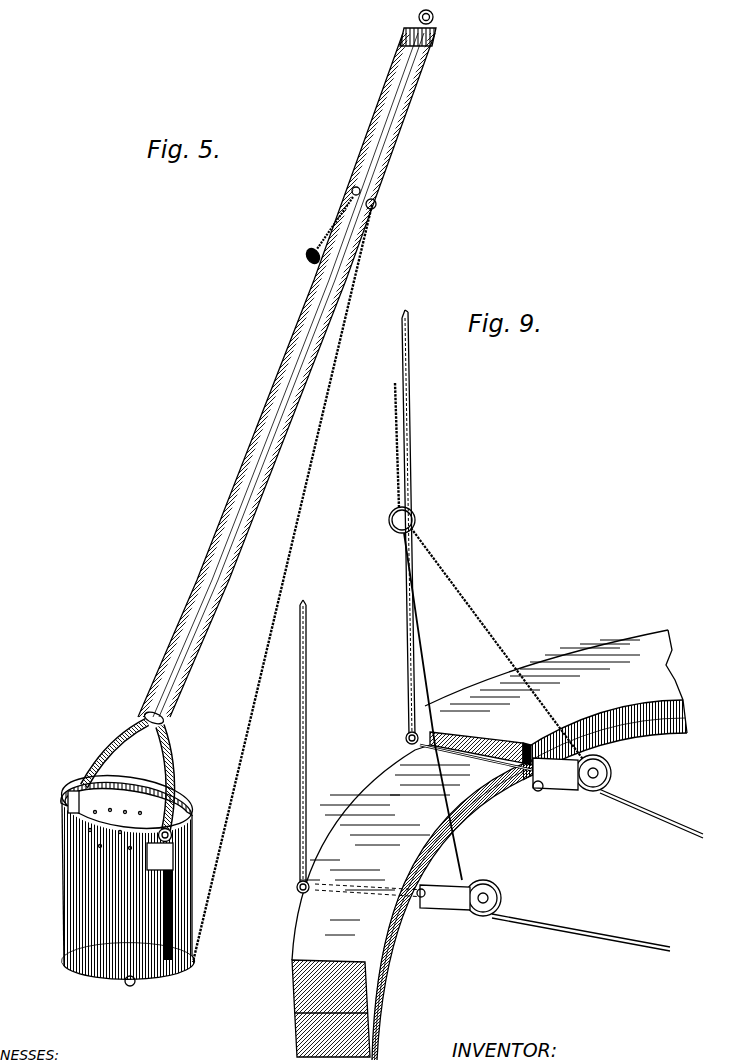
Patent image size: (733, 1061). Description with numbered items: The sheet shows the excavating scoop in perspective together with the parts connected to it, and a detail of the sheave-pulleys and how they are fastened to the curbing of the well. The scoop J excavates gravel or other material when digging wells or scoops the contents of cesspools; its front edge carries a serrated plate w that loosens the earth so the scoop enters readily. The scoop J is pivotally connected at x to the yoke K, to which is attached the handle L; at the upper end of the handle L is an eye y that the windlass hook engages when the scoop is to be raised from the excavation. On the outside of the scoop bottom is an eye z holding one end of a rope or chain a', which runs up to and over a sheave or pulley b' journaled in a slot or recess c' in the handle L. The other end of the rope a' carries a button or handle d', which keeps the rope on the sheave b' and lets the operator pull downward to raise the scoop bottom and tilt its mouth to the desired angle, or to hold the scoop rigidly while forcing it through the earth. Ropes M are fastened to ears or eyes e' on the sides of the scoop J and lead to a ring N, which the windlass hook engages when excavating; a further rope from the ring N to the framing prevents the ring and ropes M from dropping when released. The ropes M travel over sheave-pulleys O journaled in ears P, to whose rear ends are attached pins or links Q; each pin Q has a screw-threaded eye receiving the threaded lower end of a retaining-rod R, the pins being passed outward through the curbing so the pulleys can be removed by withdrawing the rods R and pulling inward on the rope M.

In FIG. 5, the scoop-handle L is at (287, 377).
In FIG. 5, the eye y is at (434, 18).
In FIG. 5, the sheave or pulley b' is at (383, 198).
In FIG. 9, the sheave or pulley b' is at (357, 798).
In FIG. 5, the slot or recess c' is at (332, 218).
In FIG. 5, the button or handle d' is at (304, 252).
In FIG. 5, the rope or chain a' is at (282, 583).
In FIG. 5, the yoke K is at (171, 772).
In FIG. 5, the scoop J is at (118, 873).
In FIG. 5, the serrated plate w is at (67, 798).
In FIG. 5, the pivot x is at (173, 835).
In FIG. 5, the ears or eyes e' is at (160, 856).
In FIG. 5, the eye z is at (126, 983).
In FIG. 9, the retaining-rod R is at (410, 390).
In FIG. 9, the ring N is at (416, 521).
In FIG. 9, the rope or ropes M is at (476, 618).
In FIG. 9, the pins or links Q is at (405, 739).
In FIG. 9, the sheave-pulleys O is at (544, 830).
In FIG. 9, the ears P is at (560, 787).